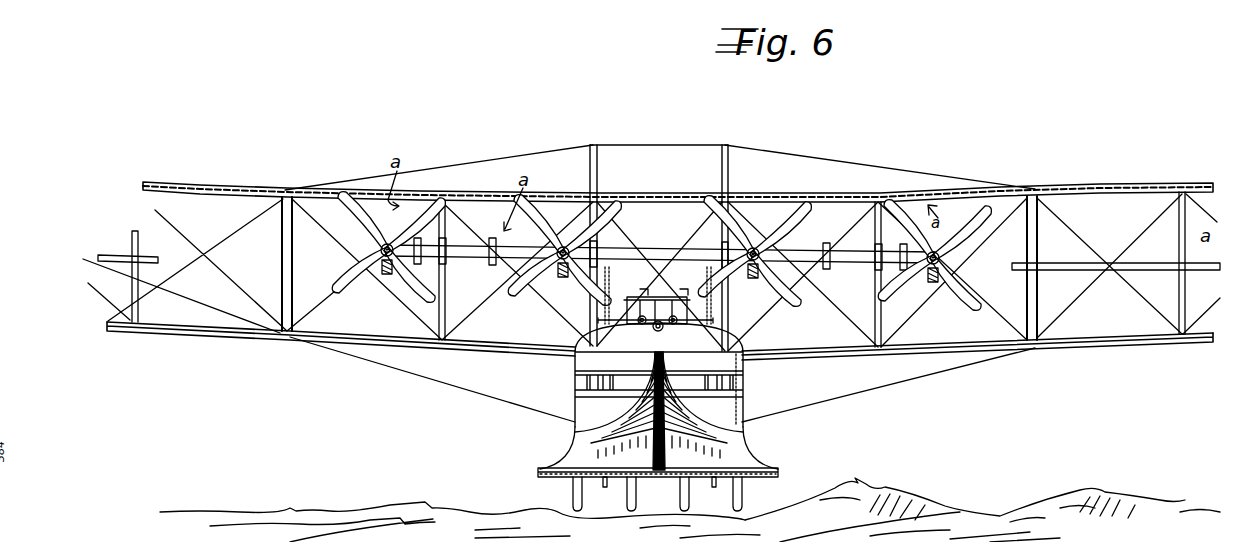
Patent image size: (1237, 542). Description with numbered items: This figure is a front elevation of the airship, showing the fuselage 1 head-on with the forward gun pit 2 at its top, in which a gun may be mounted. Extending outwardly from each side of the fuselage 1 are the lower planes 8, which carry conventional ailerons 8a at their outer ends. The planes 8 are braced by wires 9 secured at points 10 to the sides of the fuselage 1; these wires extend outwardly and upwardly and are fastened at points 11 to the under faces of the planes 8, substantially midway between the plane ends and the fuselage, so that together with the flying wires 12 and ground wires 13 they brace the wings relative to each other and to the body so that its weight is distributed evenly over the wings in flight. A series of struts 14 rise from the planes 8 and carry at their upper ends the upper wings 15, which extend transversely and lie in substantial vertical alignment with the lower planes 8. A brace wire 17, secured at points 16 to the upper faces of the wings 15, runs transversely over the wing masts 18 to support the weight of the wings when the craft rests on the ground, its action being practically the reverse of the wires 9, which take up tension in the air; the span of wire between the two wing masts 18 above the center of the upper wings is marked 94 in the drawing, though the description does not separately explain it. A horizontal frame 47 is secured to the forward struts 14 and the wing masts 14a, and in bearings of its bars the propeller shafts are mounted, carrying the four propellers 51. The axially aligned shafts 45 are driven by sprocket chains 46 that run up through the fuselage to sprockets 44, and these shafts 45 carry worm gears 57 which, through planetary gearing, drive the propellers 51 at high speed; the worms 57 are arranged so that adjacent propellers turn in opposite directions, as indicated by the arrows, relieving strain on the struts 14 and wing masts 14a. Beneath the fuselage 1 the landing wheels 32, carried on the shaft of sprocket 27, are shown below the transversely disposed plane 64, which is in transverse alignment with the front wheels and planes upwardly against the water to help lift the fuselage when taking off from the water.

The fuselage 1 is at (584, 427).
The gun pit 2 is at (659, 315).
The planes 8 is at (393, 342).
The ailerons 8a is at (1211, 263).
The wires 9 is at (457, 388).
The securing points on fuselage 10 is at (578, 418).
The securing points on planes 11 is at (293, 341).
The flying wires 12 is at (475, 213).
The ground wires 13 is at (306, 224).
The struts 14 is at (139, 277).
The wing masts 14a is at (762, 326).
The upper wings 15 is at (273, 190).
The securing points on upper wings 16 is at (294, 190).
The brace wire 17 is at (777, 160).
The wing masts 18 is at (598, 165).
The sprocket 27 is at (604, 483).
The wheels 32 is at (628, 500).
The sprockets 44 is at (611, 266).
The axially alined shafts 45 is at (461, 278).
The sprocket chains 46 is at (645, 289).
The horizontal frame 47 is at (664, 253).
The propellers 51 is at (336, 220).
The worm gears 57 is at (384, 288).
The transversely disposed planes 64 is at (538, 473).
The top wire 94 is at (661, 148).